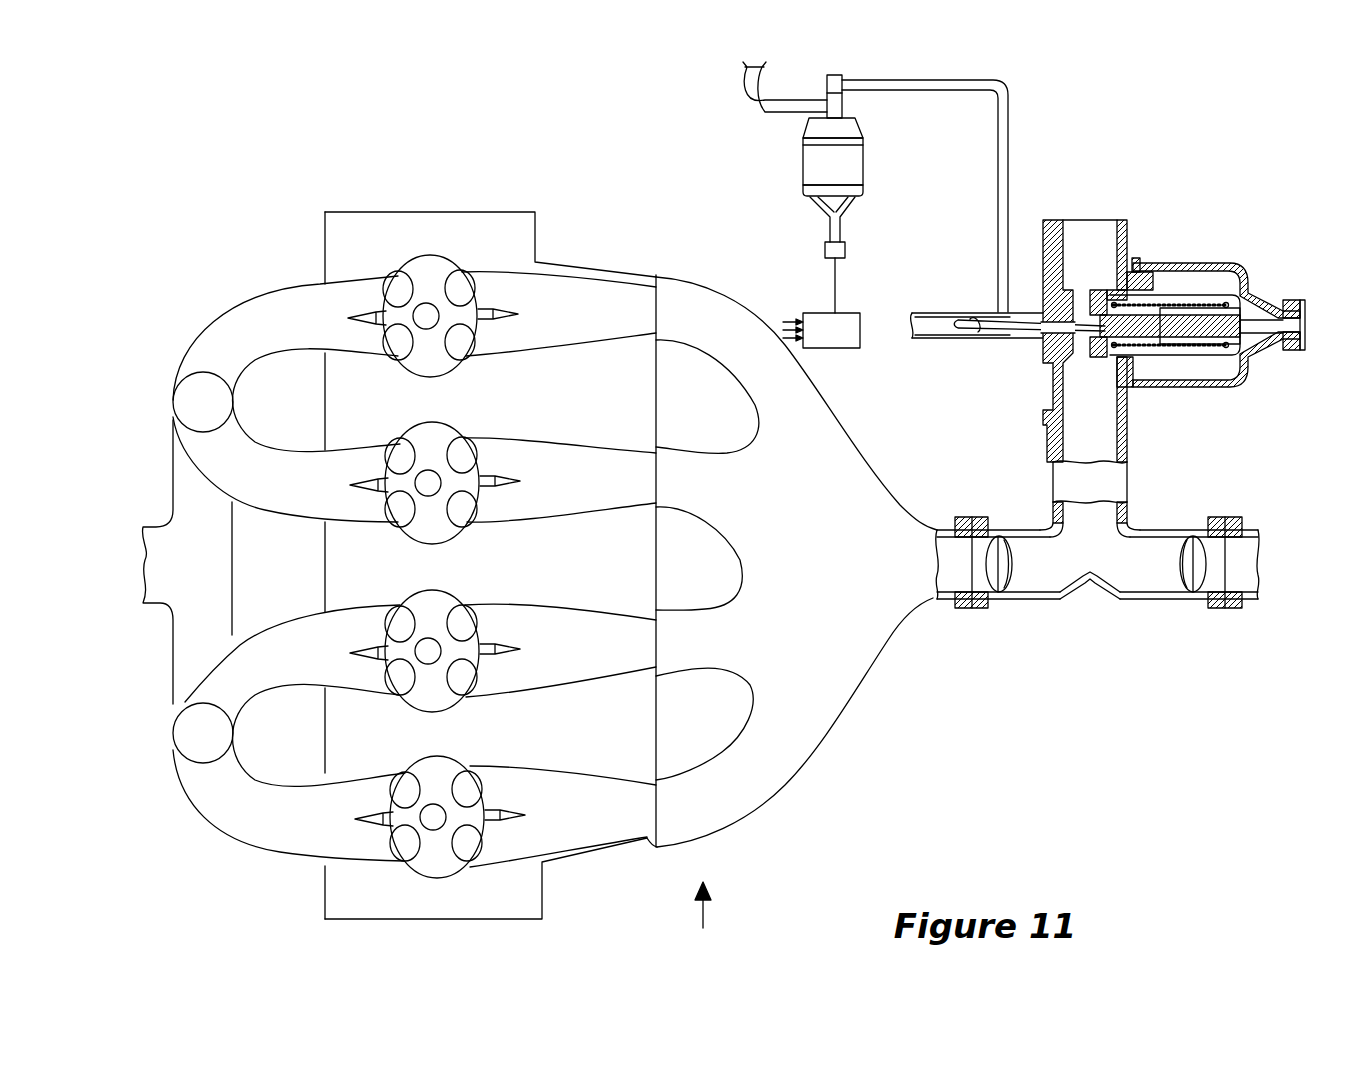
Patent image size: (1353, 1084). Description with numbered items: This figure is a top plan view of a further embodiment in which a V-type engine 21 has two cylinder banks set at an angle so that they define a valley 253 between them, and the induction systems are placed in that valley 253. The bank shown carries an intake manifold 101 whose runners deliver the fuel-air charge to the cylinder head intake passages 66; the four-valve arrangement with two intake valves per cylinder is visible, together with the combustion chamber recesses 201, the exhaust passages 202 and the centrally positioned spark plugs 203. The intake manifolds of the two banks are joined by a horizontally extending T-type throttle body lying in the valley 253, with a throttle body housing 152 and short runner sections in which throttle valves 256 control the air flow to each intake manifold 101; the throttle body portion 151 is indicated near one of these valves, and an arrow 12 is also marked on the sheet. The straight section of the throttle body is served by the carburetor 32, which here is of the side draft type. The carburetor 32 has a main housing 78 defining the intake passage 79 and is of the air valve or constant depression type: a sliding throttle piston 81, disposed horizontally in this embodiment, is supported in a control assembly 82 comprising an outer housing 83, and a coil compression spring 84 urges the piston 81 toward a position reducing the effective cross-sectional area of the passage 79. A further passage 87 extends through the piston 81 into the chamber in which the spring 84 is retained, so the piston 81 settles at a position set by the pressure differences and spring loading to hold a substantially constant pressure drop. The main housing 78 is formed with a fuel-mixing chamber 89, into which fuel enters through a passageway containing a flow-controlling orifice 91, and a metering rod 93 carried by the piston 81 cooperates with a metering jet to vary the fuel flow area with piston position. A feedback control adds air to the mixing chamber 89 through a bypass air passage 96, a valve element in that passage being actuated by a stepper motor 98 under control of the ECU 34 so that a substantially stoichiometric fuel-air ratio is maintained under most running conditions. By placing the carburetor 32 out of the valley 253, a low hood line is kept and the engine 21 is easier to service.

The engine 21 is at (567, 215).
The combustion chamber recesses 201 is at (415, 266).
The spark plugs 203 is at (427, 303).
The exhaust passages 202 is at (270, 332).
The cylinder head intake passages 66 is at (578, 328).
The intake manifold 101 is at (828, 717).
The direction arrow 12 is at (671, 914).
The stepper motor 98 is at (864, 163).
The bypass air passage 96 is at (1009, 120).
The ECU 34 is at (842, 353).
The flow-controlling orifice 91 is at (950, 330).
The fuel-mixing chamber 89 is at (992, 330).
The intake passage 79 is at (1066, 221).
The metering rod 93 is at (1078, 322).
The further passage 87 is at (1080, 334).
The main housing 78 is at (1133, 410).
The carburetor 32 is at (1185, 198).
The sliding throttle piston 81 is at (1163, 293).
The control assembly 82 is at (1233, 260).
The outer housing 83 is at (1252, 279).
The coil compression spring 84 is at (1235, 385).
The horizontal tube left portion 151 is at (1027, 628).
The throttle body housing 152 is at (1147, 598).
The valley 253 is at (1122, 613).
The throttle valves 256 is at (978, 613).